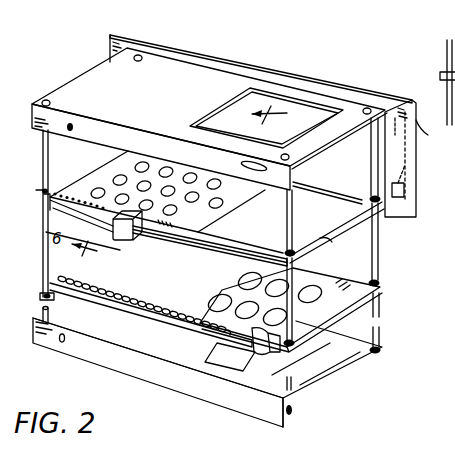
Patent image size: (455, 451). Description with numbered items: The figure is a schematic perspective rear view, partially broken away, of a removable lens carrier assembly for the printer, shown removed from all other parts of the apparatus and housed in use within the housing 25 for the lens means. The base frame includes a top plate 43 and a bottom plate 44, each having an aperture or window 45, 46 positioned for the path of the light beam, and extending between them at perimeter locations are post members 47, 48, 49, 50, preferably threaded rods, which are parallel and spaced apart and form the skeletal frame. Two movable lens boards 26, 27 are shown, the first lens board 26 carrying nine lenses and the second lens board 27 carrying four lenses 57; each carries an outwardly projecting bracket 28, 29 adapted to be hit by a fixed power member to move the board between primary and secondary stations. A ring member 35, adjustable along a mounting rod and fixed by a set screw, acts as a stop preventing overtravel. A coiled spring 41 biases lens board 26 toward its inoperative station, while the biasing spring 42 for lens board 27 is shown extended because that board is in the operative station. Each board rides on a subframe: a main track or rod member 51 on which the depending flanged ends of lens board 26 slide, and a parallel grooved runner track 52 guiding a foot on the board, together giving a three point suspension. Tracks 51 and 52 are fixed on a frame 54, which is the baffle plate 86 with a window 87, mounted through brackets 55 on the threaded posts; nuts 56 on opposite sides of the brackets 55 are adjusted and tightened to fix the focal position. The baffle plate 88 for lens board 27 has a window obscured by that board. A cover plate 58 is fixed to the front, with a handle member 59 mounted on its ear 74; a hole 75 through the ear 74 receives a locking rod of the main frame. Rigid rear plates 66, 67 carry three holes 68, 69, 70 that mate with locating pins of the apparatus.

The housing 25 is at (207, 57).
The first lens board 26 is at (215, 190).
The second lens board 27 is at (217, 304).
The bracket 28 is at (126, 242).
The bracket 29 is at (230, 357).
The ring member 35 is at (283, 250).
The coiled spring 41 is at (75, 187).
The biasing spring 42 is at (41, 294).
The top plate 43 is at (73, 88).
The bottom plate 44 is at (120, 334).
The aperture 45 is at (263, 100).
The aperture 46 is at (323, 363).
The post member 47 is at (447, 112).
The post member 48 is at (139, 56).
The post member 49 is at (375, 172).
The post member 50 is at (290, 393).
The main track rod member 51 is at (258, 253).
The runner track 52 is at (322, 190).
The frame 54 is at (178, 251).
The bracket 55 is at (441, 70).
The nut 56 is at (447, 85).
The lens 57 is at (167, 168).
The cover plate 58 is at (344, 86).
The handle member 59 is at (428, 135).
The rear plate 66 is at (118, 136).
The rear plate 67 is at (192, 387).
The hole 68 is at (73, 125).
The hole 69 is at (240, 164).
The hole 70 is at (57, 339).
The ear 74 is at (396, 115).
The hole 75 is at (404, 196).
The baffle plate 86 is at (210, 249).
The window 87 is at (313, 227).
The baffle plate 88 is at (159, 295).